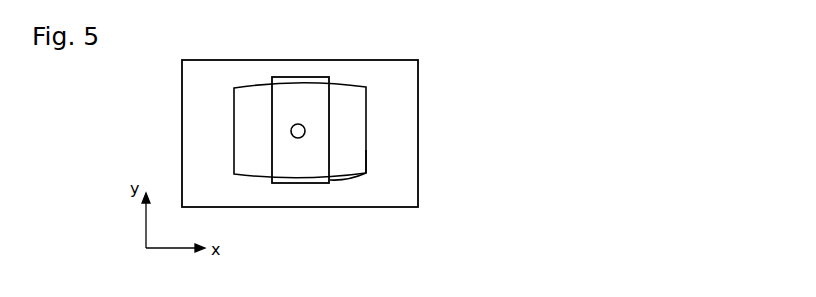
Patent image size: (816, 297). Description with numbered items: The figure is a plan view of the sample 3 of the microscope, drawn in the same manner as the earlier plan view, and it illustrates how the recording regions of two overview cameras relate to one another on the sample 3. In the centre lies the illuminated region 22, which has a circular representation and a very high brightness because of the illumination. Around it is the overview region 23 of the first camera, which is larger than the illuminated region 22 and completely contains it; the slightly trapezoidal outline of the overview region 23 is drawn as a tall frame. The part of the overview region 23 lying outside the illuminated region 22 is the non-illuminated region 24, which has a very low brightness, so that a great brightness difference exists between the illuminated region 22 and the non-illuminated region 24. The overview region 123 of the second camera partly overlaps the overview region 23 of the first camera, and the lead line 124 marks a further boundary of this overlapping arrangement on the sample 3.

The sample 3 is at (418, 91).
The illuminated region 22 is at (306, 131).
The overview region 23 is at (330, 116).
The non-illuminated region 24 is at (268, 158).
The overview region of the second camera 123 is at (340, 178).
The right boundary of second region 124 is at (355, 163).